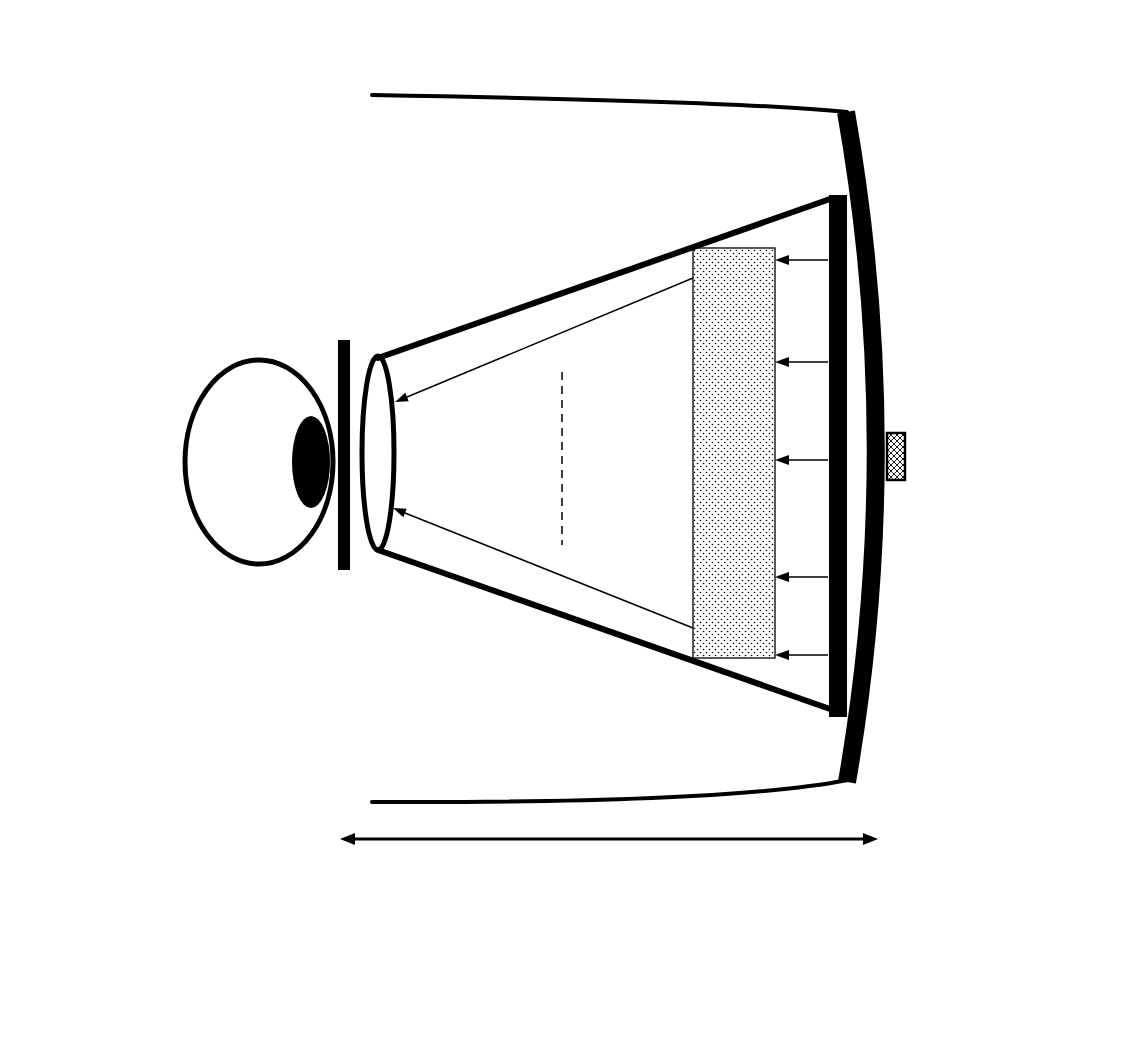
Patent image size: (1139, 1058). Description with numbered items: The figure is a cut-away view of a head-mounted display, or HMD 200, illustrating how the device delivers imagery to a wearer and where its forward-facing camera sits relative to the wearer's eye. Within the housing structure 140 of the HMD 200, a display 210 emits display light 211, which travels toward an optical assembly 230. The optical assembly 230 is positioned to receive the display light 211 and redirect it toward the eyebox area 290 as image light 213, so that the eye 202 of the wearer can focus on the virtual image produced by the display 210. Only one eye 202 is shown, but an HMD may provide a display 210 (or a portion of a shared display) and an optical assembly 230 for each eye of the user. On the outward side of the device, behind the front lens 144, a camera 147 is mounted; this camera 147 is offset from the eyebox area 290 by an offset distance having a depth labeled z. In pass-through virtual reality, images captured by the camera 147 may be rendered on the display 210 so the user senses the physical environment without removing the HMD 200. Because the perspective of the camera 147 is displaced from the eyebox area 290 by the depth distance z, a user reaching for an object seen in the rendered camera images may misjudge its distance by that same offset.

The HMD 200 is at (1122, 66).
The housing / frame 140 is at (553, 97).
The lens 144 is at (865, 187).
The camera 147 is at (903, 433).
The eye 202 is at (227, 346).
The display 210 is at (828, 196).
The display light 211 is at (801, 471).
The image light 213 is at (543, 453).
The optical assembly 230 is at (752, 466).
The eyebox area 290 is at (337, 340).